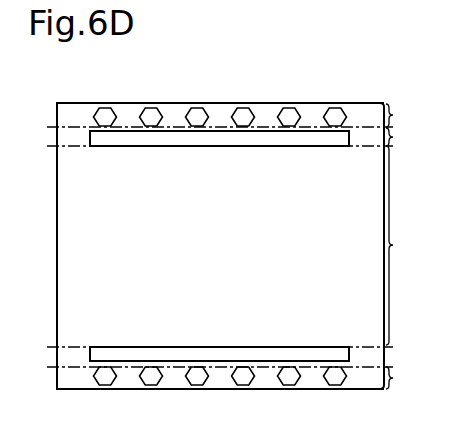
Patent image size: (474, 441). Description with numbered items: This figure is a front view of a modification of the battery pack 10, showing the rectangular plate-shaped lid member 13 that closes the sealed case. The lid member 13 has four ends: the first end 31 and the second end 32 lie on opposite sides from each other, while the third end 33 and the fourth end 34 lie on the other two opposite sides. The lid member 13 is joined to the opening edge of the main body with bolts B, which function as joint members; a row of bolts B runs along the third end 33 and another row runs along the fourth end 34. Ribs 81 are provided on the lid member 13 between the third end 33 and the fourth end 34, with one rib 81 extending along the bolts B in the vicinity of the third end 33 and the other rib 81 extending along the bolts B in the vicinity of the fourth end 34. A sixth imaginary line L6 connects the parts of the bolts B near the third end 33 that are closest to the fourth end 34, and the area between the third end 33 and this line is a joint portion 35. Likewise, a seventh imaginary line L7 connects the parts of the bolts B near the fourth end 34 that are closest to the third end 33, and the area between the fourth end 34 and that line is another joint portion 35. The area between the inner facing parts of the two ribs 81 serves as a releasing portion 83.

The battery pack 10 is at (375, 68).
The lid member 13 is at (312, 112).
The first end 31 is at (57, 278).
The third end 33 is at (182, 103).
The fourth end 34 is at (182, 389).
The bolts B is at (152, 108).
The ribs 81 is at (296, 141).
The sixth imaginary line L6 is at (213, 132).
The seventh imaginary line L7 is at (214, 362).
The joint portion 35 is at (405, 248).
The second end 32 is at (405, 140).
The releasing portion 83 is at (405, 245).